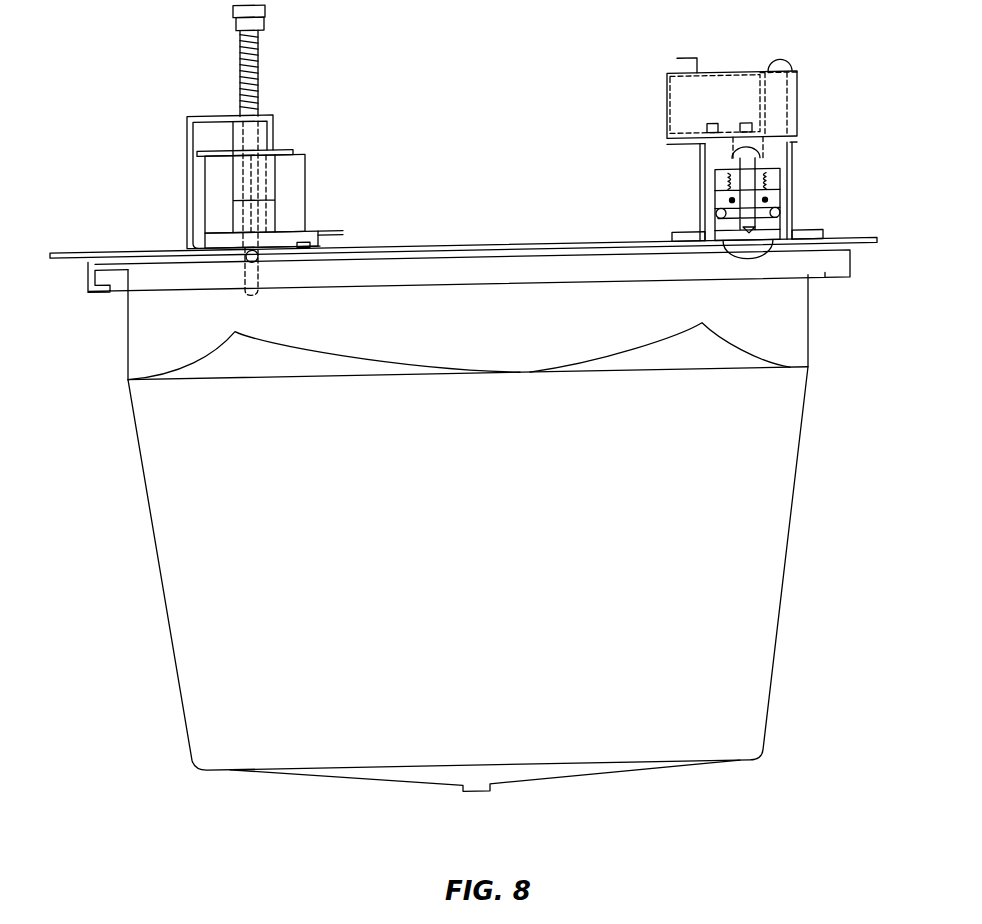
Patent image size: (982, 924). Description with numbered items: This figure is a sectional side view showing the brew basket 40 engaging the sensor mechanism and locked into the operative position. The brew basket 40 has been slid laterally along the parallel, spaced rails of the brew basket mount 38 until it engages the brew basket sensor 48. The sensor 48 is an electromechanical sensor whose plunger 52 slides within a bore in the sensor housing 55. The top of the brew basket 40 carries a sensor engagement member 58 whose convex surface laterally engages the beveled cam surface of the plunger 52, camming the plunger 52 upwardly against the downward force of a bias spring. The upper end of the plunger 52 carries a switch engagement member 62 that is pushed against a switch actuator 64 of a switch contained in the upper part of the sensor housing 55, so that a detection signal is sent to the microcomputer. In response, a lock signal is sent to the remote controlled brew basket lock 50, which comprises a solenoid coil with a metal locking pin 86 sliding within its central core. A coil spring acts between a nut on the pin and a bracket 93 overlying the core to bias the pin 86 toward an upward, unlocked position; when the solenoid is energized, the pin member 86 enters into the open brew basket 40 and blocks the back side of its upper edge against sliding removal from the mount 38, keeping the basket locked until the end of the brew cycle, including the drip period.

The brew basket mount 38 is at (108, 242).
The brew basket 40 is at (772, 543).
The brew basket sensor 48 is at (814, 143).
The remote controlled brew basket lock 50 is at (285, 137).
The plunger 52 is at (733, 243).
The sensor housing 55 is at (784, 196).
The sensor engagement member 58 is at (797, 251).
The switch engagement member 62 is at (740, 155).
The switch actuator 64 is at (750, 143).
The locking pin 86 is at (262, 56).
The bracket 93 is at (212, 107).